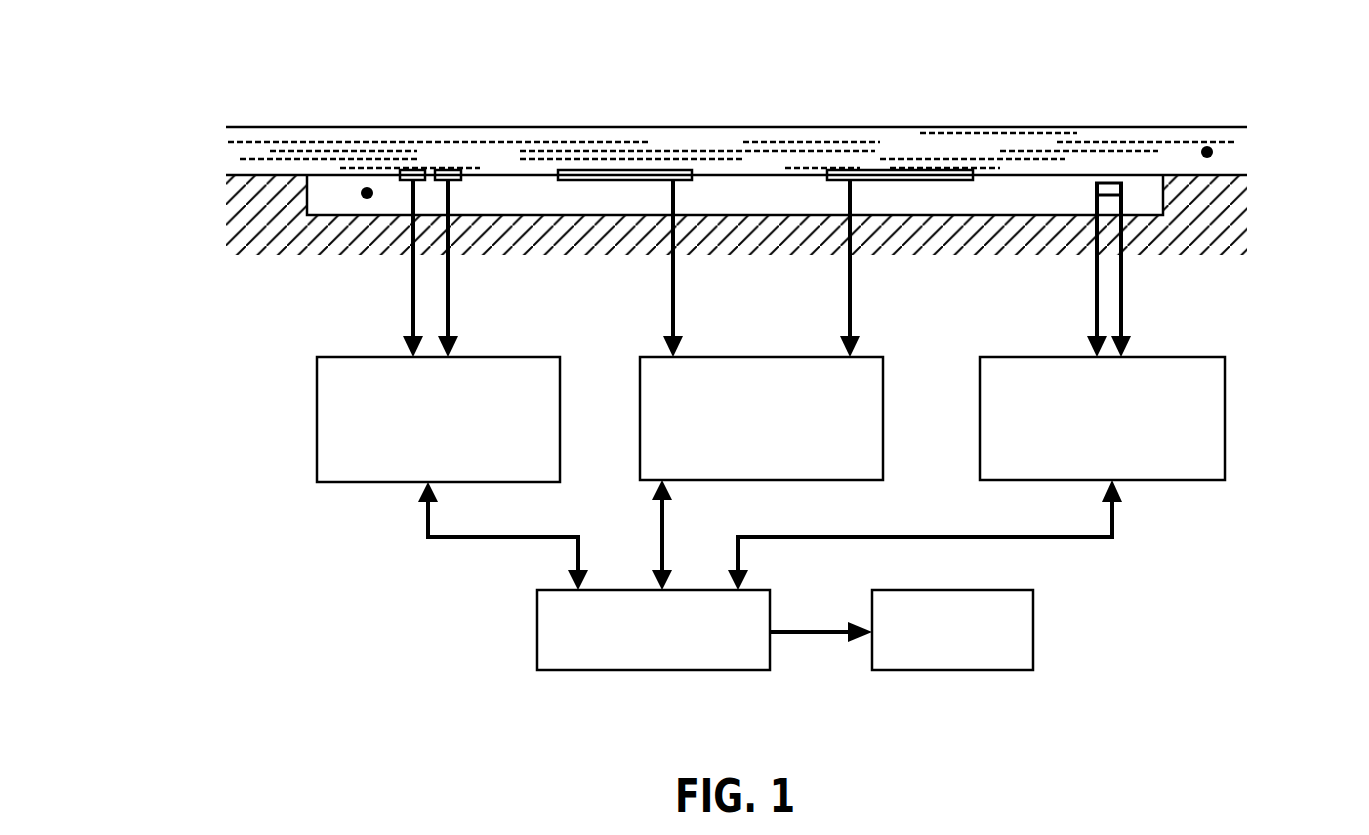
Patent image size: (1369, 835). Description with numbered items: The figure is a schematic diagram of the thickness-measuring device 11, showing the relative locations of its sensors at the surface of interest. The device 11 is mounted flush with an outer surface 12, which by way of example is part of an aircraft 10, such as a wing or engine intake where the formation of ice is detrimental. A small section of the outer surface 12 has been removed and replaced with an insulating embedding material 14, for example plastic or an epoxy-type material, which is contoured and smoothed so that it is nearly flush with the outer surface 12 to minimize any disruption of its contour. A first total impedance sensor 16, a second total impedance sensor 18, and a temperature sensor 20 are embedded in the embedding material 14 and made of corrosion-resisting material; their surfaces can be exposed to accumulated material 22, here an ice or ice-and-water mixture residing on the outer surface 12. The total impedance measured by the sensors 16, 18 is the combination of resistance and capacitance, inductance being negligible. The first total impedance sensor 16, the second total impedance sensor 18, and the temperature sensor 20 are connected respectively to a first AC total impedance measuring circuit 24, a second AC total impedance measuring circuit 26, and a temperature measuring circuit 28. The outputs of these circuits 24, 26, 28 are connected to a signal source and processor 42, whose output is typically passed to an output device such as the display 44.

The aircraft 10 is at (795, 224).
The thickness-measuring device 11 is at (650, 92).
The outer surface 12 is at (796, 139).
The insulating embedding material 14 is at (709, 242).
The first total impedance sensor 16 is at (448, 172).
The second total impedance sensor 18 is at (839, 175).
The temperature sensor 20 is at (1187, 179).
The accumulated material 22 is at (1269, 102).
The first AC total impedance measuring circuit 24 is at (397, 457).
The second AC total impedance measuring circuit 26 is at (790, 441).
The temperature measuring circuit 28 is at (1128, 458).
The signal source and processor 42 is at (770, 596).
The display 44 is at (1009, 651).